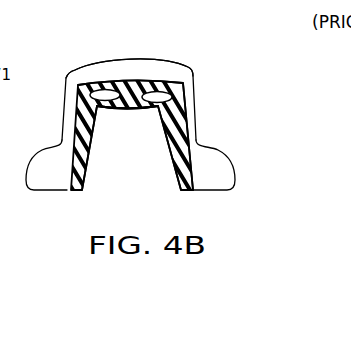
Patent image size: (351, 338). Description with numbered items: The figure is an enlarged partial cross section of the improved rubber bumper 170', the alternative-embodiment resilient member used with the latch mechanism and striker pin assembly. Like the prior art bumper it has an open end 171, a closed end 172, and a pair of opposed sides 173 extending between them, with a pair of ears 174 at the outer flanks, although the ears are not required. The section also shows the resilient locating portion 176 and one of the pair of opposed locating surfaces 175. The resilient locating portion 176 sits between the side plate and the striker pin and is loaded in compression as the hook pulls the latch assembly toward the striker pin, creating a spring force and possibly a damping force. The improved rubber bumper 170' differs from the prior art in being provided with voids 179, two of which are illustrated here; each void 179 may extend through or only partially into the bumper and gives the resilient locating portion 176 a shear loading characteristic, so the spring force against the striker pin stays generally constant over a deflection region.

The improved rubber bumper 170' is at (191, 99).
The open end 171 is at (137, 191).
The closed end 172 is at (133, 108).
The opposed sides 173 is at (85, 168).
The ears 174 is at (31, 183).
The locating surfaces 175 is at (155, 74).
The resilient locating portion 176 is at (165, 80).
The void 179 is at (110, 94).